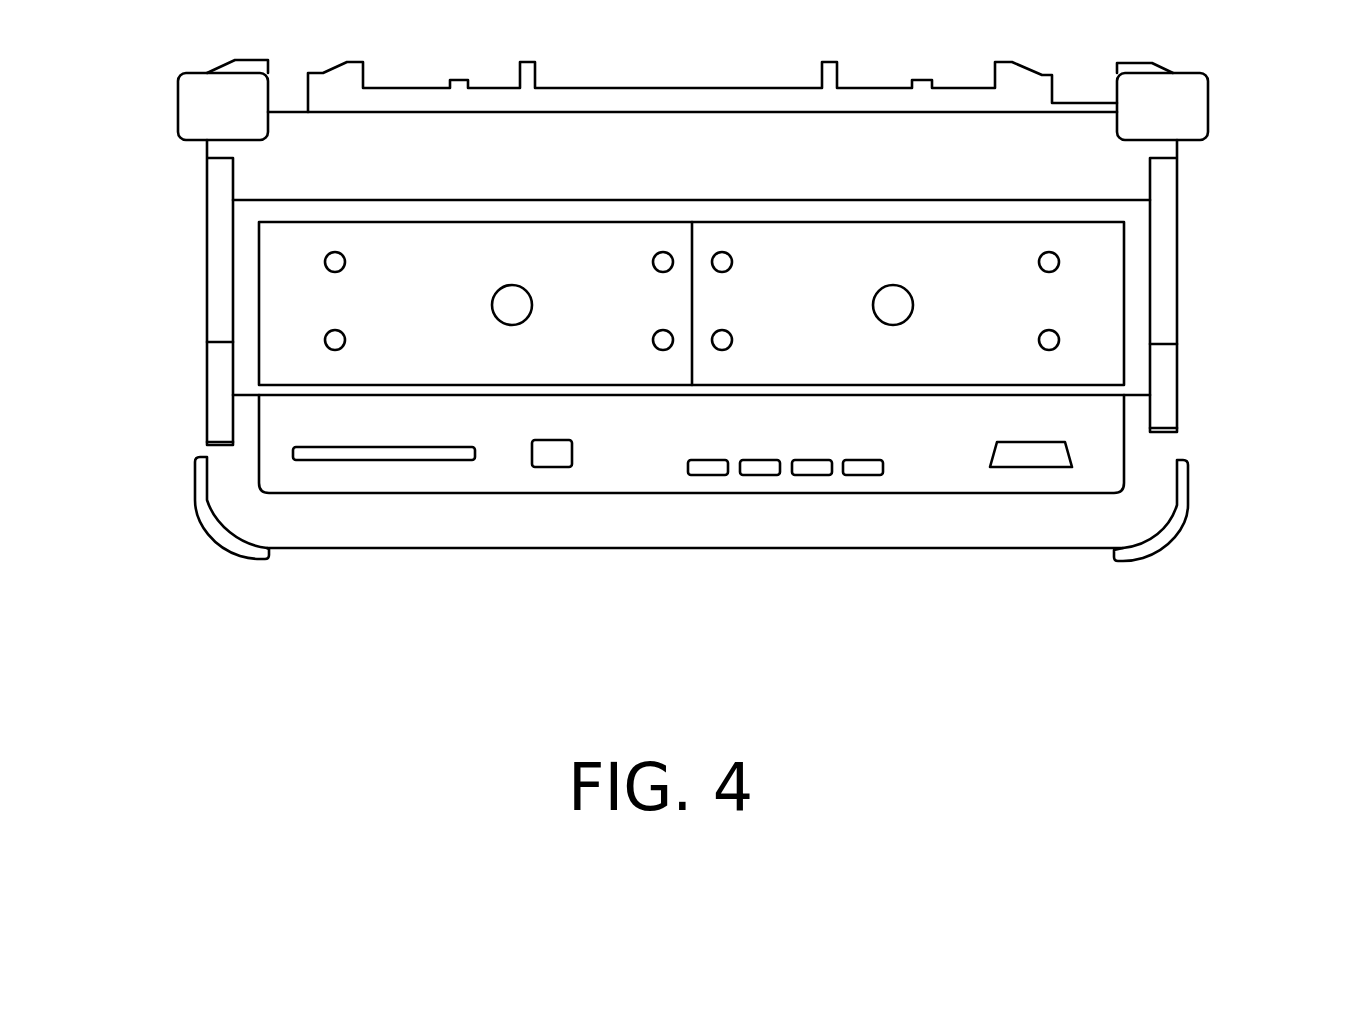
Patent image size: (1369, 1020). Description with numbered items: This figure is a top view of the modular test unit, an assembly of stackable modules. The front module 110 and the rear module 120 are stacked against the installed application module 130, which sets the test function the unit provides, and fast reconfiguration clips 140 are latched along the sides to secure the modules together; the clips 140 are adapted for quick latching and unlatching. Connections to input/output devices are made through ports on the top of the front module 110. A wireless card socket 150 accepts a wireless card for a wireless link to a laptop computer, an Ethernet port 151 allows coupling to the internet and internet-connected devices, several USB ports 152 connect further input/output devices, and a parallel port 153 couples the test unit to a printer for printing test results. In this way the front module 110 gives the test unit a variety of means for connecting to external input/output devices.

The front module 110 is at (1188, 445).
The rear module 120 is at (1188, 150).
The application module 130 is at (1160, 287).
The fast reconfiguration clips 140 is at (216, 183).
The wireless card socket 150 is at (358, 460).
The Ethernet port 151 is at (562, 467).
The USB ports 152 is at (820, 470).
The parallel port 153 is at (1032, 460).